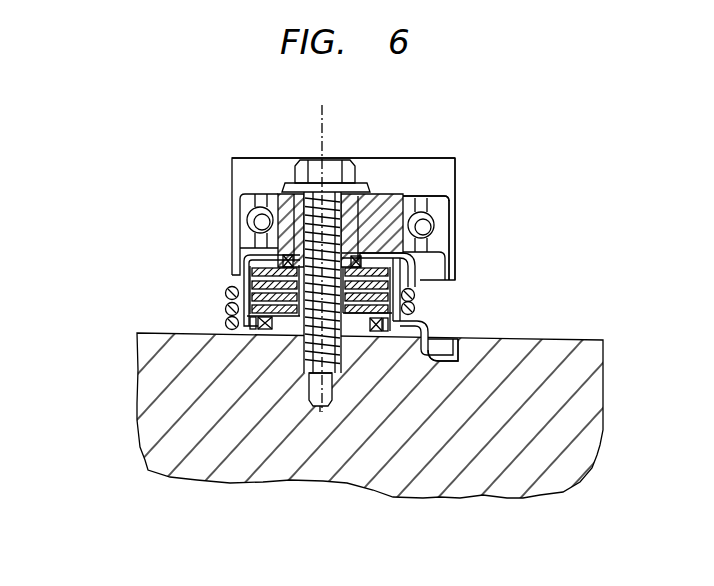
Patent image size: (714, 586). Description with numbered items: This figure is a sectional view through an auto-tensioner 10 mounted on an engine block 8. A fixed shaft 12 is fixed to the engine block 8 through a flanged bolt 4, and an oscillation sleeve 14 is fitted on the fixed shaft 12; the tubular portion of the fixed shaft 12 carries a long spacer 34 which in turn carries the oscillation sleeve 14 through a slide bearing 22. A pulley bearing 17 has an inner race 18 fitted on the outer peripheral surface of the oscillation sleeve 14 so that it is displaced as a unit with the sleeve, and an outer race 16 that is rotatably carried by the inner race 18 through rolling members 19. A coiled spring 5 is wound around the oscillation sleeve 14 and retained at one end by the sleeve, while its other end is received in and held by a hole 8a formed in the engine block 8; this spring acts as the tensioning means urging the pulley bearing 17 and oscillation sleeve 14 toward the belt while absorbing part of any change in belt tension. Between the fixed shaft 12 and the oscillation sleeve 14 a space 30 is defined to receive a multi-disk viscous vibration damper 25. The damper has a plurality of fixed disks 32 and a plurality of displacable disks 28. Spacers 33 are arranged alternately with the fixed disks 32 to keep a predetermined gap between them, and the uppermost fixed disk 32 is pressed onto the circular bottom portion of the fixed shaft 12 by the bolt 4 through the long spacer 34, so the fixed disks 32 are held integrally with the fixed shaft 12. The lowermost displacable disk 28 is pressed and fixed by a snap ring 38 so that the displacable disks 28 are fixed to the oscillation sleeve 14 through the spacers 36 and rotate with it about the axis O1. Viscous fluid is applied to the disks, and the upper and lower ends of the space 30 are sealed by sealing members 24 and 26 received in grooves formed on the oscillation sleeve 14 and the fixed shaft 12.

The flanged bolt 4 is at (343, 168).
The coiled spring 5 is at (447, 346).
The engine block 8 is at (341, 478).
The hole 8a is at (458, 358).
The auto-tensioner 10 is at (457, 147).
The fixed shaft 12 is at (284, 329).
The oscillation sleeve 14 is at (400, 210).
The outer race 16 is at (236, 158).
The pulley bearing 17 is at (462, 167).
The inner race 18 is at (422, 244).
The rolling members 19 is at (437, 226).
The slide bearing 22 is at (368, 193).
The sealing member 24 is at (258, 235).
The multi-disk viscous vibration damper 25 is at (222, 295).
The sealing member 26 is at (376, 334).
The displacable disks 28 is at (248, 272).
The space 30 is at (255, 305).
The fixed disks 32 is at (288, 256).
The spacers 33 is at (341, 326).
The long spacer 34 is at (300, 188).
The spacers 36 is at (414, 297).
The snap ring 38 is at (259, 334).
The axis O1 is at (331, 250).